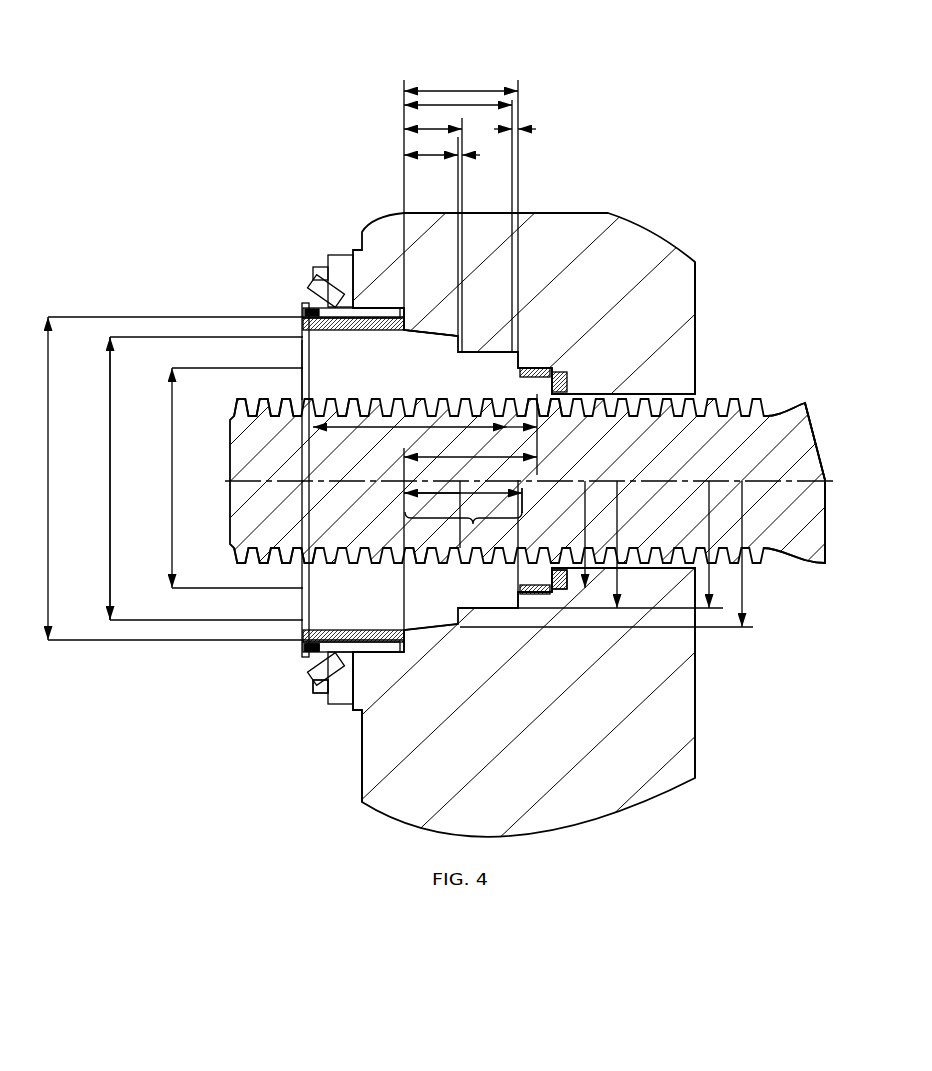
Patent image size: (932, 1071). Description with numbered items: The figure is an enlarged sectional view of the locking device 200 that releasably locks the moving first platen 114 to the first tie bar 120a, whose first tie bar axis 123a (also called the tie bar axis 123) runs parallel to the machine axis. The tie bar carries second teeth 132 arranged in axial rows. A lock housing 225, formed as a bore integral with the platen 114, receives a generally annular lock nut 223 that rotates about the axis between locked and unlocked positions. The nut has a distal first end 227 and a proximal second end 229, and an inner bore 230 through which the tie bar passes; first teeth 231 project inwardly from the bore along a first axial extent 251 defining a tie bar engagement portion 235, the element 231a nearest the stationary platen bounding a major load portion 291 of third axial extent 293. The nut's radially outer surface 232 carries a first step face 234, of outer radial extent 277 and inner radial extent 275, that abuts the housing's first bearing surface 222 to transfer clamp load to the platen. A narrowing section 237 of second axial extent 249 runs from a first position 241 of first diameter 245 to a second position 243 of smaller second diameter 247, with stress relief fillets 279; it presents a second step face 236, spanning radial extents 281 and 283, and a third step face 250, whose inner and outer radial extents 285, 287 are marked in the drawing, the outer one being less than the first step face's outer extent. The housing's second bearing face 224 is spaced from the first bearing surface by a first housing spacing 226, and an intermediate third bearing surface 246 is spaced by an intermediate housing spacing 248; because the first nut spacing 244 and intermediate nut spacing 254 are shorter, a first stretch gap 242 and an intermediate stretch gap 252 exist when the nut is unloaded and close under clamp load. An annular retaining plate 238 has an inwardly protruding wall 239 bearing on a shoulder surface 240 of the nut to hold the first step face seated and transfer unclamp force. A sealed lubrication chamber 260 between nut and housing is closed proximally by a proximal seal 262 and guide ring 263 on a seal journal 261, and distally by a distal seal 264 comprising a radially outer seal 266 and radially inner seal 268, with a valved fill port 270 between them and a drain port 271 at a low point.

The first platen 114 is at (504, 813).
The first tie bar 120a is at (237, 527).
The tie bar axis 123 is at (830, 481).
The first tie bar axis 123a is at (815, 483).
The second teeth 132 is at (293, 400).
The locking device 200 is at (690, 173).
The first bearing surface 222 is at (407, 325).
The lock nut 223 is at (320, 577).
The second bearing face 224 is at (511, 605).
The lock housing 225 is at (399, 652).
The first housing spacing 226 is at (440, 89).
The first end 227 is at (303, 343).
The second end 229 is at (585, 397).
The inner bore 230 is at (617, 393).
The first teeth 231 is at (307, 367).
The first inwardly projecting engagement element 231a is at (540, 408).
The radially outer surface 232 is at (373, 310).
The first step face 234 is at (416, 547).
The tie bar engagement portion 235 is at (350, 418).
The second step face 236 is at (520, 368).
The narrowing section 237 is at (413, 692).
The retaining plate 238 is at (305, 653).
The radially inwardly protruding wall 239 is at (350, 703).
The shoulder surface 240 is at (313, 645).
The first position 241 is at (403, 506).
The first stretch gap 242 is at (541, 132).
The second position 243 is at (520, 530).
The first nut spacing 244 is at (488, 106).
The first diameter 245 is at (110, 460).
The third bearing surface 246 is at (450, 330).
The second diameter 247 is at (172, 413).
The intermediate housing spacing 248 is at (433, 127).
The second axial extent 249 is at (458, 493).
The third step face 250 is at (462, 347).
The first axial extent 251 is at (423, 432).
The intermediate stretch gap 252 is at (483, 157).
The intermediate nut spacing 254 is at (432, 157).
The lubrication chamber 260 is at (395, 398).
The seal journal 261 is at (560, 360).
The proximal seal 262 is at (563, 582).
The guide ring 263 is at (522, 368).
The distal seal 264 is at (310, 633).
The radially outer seal 266 is at (320, 686).
The radially inner seal 268 is at (312, 647).
The valved fill port 270 is at (320, 300).
The drain port 271 is at (327, 658).
The first inner radial extent 275 is at (89, 478).
The first outer radial extent 277 is at (48, 380).
The fillets 279 is at (457, 362).
The second inner radial extent 281 is at (585, 495).
The second outer radial extent 283 is at (617, 513).
The dimension 285 is at (709, 495).
The dimension 287 is at (742, 517).
The major load portion 291 is at (500, 436).
The third axial extent 293 is at (455, 462).